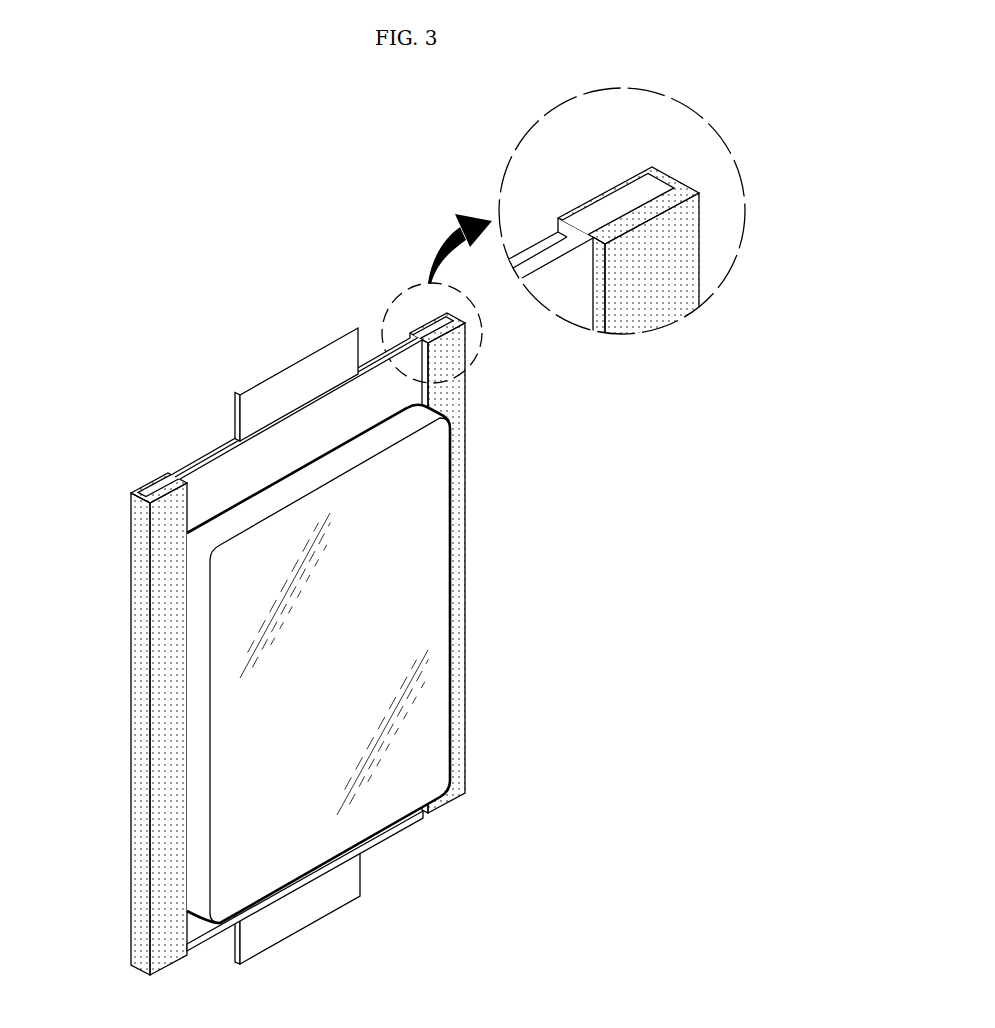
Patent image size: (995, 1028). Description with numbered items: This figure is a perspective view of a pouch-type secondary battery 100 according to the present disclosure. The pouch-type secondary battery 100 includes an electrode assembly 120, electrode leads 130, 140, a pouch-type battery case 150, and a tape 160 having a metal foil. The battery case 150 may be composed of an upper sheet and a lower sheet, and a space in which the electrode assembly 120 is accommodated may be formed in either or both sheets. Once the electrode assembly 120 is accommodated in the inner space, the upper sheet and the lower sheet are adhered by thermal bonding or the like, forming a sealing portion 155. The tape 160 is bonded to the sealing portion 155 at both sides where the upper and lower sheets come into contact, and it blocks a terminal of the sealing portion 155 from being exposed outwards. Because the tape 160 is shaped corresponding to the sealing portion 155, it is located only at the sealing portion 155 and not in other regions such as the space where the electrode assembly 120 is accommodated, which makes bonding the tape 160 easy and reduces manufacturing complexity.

The pouch-type secondary battery 100 is at (157, 326).
The electrode assembly 120 is at (433, 510).
The electrode lead 130 is at (296, 376).
The electrode lead 140 is at (307, 912).
The pouch-type battery case 150 is at (402, 825).
The sealing portion 155 is at (222, 476).
The tape 160 is at (142, 541).